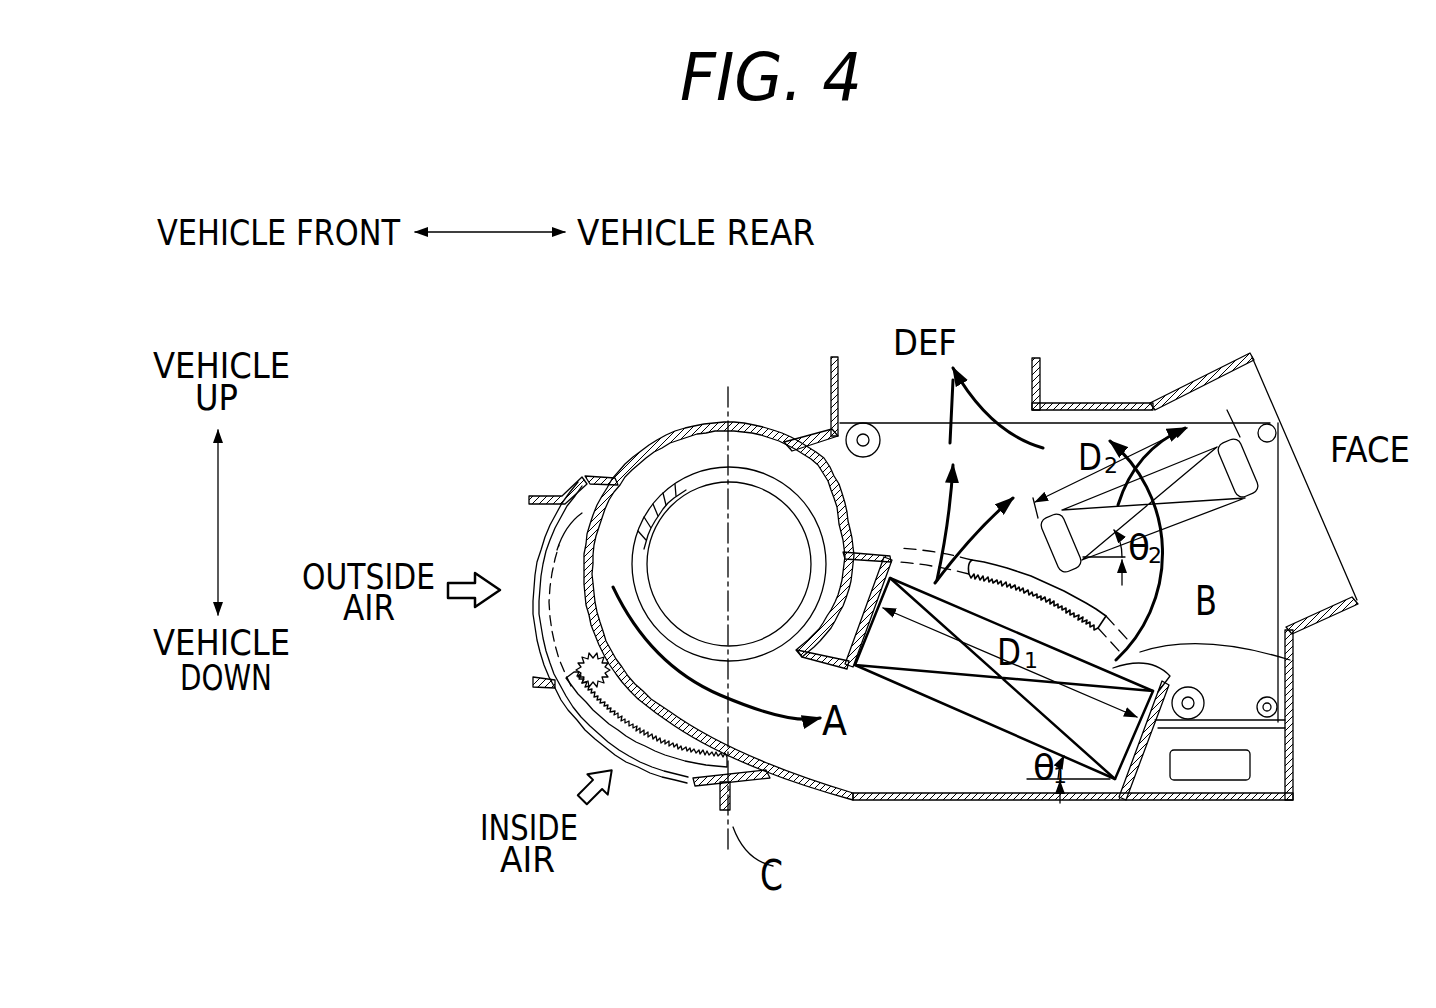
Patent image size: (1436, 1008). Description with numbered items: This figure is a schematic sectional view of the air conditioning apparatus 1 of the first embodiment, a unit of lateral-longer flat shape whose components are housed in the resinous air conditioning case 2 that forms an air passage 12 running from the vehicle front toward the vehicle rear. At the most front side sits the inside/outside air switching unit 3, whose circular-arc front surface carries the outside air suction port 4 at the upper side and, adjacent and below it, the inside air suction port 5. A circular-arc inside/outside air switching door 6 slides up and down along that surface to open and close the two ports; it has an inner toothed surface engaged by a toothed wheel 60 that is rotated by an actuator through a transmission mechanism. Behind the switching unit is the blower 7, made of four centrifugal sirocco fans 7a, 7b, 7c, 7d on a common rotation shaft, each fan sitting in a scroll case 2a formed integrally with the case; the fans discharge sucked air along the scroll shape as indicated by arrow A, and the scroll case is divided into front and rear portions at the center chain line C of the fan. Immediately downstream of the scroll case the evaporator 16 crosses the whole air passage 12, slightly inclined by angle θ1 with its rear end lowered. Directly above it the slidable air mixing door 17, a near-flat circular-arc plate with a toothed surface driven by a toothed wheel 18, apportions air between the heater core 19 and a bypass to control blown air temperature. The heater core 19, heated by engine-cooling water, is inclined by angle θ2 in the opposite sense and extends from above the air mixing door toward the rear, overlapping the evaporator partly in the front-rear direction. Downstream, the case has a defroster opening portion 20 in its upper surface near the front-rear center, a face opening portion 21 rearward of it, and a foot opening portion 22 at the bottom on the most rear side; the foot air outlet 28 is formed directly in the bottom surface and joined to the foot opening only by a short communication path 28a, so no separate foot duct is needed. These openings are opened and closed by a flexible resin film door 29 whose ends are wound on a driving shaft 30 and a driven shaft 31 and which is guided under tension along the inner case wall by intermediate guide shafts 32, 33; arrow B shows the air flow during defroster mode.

The air conditioning apparatus 1 is at (767, 383).
The air conditioning case 2 is at (960, 802).
The scroll case 2a is at (628, 463).
The inside/outside air switching unit 3 is at (550, 697).
The outside air suction port 4 is at (537, 555).
The inside air suction port 5 is at (667, 785).
The inside/outside air switching door 6 is at (567, 707).
The blower 7 is at (643, 510).
The fan 7a is at (697, 487).
The fan 7b is at (655, 510).
The fan 7c is at (664, 499).
The fan 7d is at (675, 490).
The air passage 12 is at (950, 728).
The evaporator 16 is at (1047, 697).
The air mixing door 17 is at (1008, 575).
The toothed wheel 18 is at (1290, 660).
The heater core 19 is at (1183, 490).
The defroster opening portion 20 is at (977, 387).
The face opening portion 21 is at (1318, 580).
The foot opening portion 22 is at (1247, 730).
The foot air outlet 28 is at (1207, 802).
The communication path 28a is at (1272, 767).
The film door 29 is at (1280, 520).
The driving shaft 30 is at (1167, 727).
The driven shaft 31 is at (863, 423).
The intermediate guide shaft 32 is at (1277, 707).
The intermediate guide shaft 33 is at (1275, 425).
The toothed wheel 60 is at (587, 660).